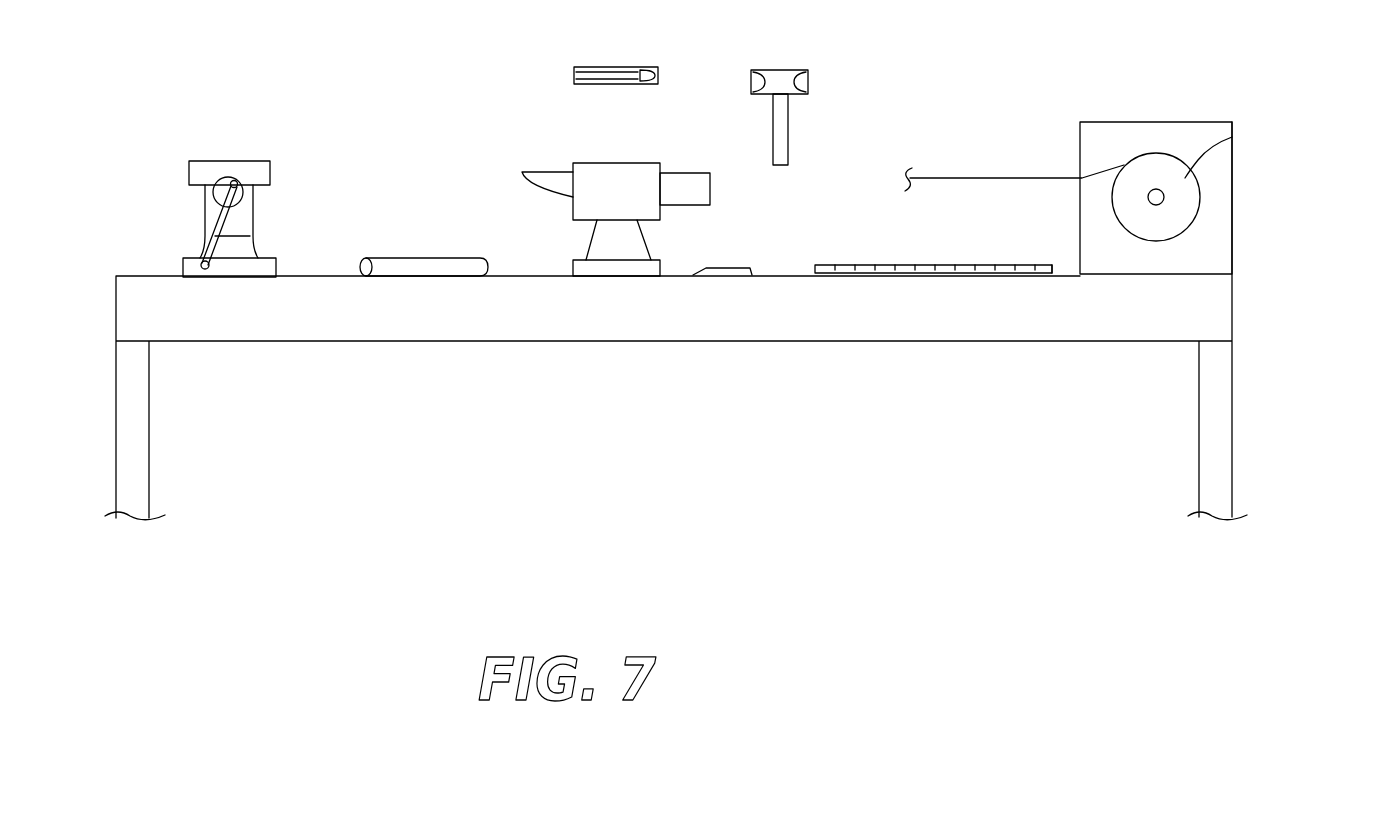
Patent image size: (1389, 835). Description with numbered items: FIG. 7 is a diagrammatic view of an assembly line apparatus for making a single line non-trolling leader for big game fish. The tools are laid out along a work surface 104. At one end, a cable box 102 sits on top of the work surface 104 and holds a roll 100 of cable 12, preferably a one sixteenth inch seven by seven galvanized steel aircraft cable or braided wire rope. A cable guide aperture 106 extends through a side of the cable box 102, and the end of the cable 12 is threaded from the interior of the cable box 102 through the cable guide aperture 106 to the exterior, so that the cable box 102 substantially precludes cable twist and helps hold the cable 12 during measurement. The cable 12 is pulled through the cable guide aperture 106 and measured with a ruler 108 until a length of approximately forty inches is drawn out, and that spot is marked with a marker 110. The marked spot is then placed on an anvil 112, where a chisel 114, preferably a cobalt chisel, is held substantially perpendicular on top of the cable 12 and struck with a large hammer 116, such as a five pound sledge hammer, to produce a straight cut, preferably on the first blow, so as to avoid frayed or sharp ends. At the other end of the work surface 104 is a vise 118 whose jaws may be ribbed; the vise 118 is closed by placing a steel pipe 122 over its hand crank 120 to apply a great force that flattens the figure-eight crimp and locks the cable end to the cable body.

The cable 12 is at (1180, 162).
The roll of cable 100 is at (1232, 137).
The cable box 102 is at (1232, 187).
The work surface 104 is at (1060, 272).
The cable guide aperture 106 is at (1080, 178).
The ruler 108 is at (942, 275).
The marker 110 is at (727, 277).
The anvil 112 is at (550, 172).
The chisel 114 is at (606, 67).
The hammer 116 is at (780, 70).
The vise 118 is at (258, 248).
The hand crank 120 is at (205, 218).
The steel pipe 122 is at (420, 258).